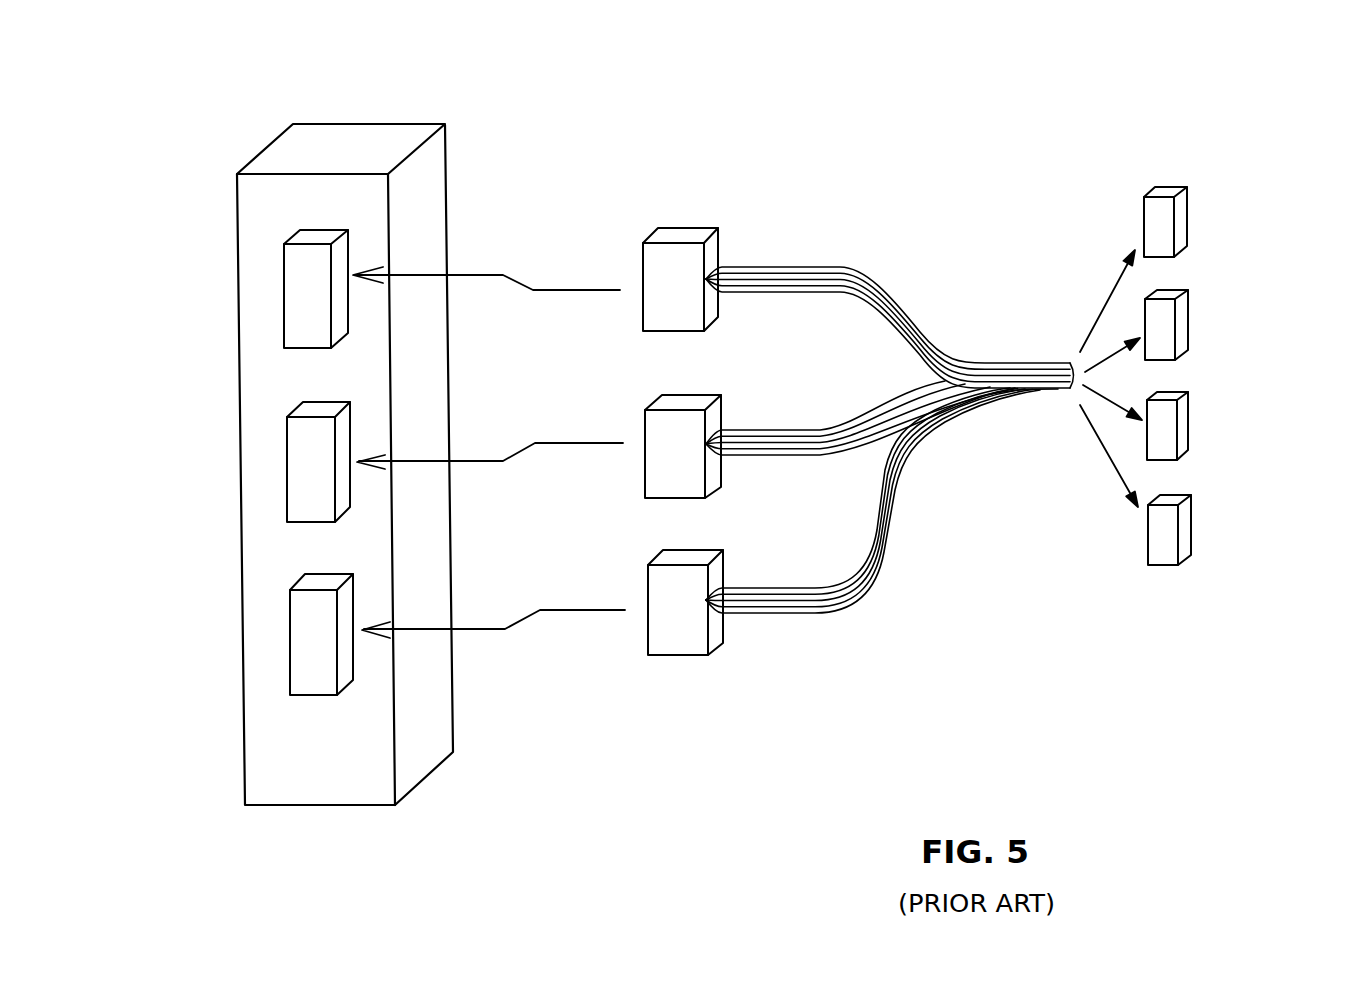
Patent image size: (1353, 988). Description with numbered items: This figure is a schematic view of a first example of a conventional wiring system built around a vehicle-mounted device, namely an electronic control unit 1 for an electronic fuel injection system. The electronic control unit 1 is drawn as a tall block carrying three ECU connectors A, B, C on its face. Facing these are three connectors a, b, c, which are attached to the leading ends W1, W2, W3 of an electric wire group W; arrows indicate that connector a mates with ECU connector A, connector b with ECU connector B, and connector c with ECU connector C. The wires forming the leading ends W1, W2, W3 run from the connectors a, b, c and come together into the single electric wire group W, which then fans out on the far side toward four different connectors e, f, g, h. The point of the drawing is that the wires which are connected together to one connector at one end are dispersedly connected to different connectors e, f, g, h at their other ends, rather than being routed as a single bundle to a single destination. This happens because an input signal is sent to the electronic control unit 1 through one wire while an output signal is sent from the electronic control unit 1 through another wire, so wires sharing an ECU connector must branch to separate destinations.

The electronic control unit (ECU) 1 is at (370, 140).
The ECU connector A is at (283, 289).
The ECU connector B is at (283, 457).
The ECU connector C is at (285, 657).
The connector a is at (692, 237).
The connector b is at (655, 466).
The connector c is at (665, 645).
The electric wire group W is at (890, 386).
The leading end of electric wire group W1 is at (762, 253).
The leading end of electric wire group W2 is at (750, 425).
The leading end of electric wire group W3 is at (768, 570).
The connector e is at (1188, 223).
The connector f is at (1190, 320).
The connector g is at (1192, 427).
The connector h is at (1193, 525).